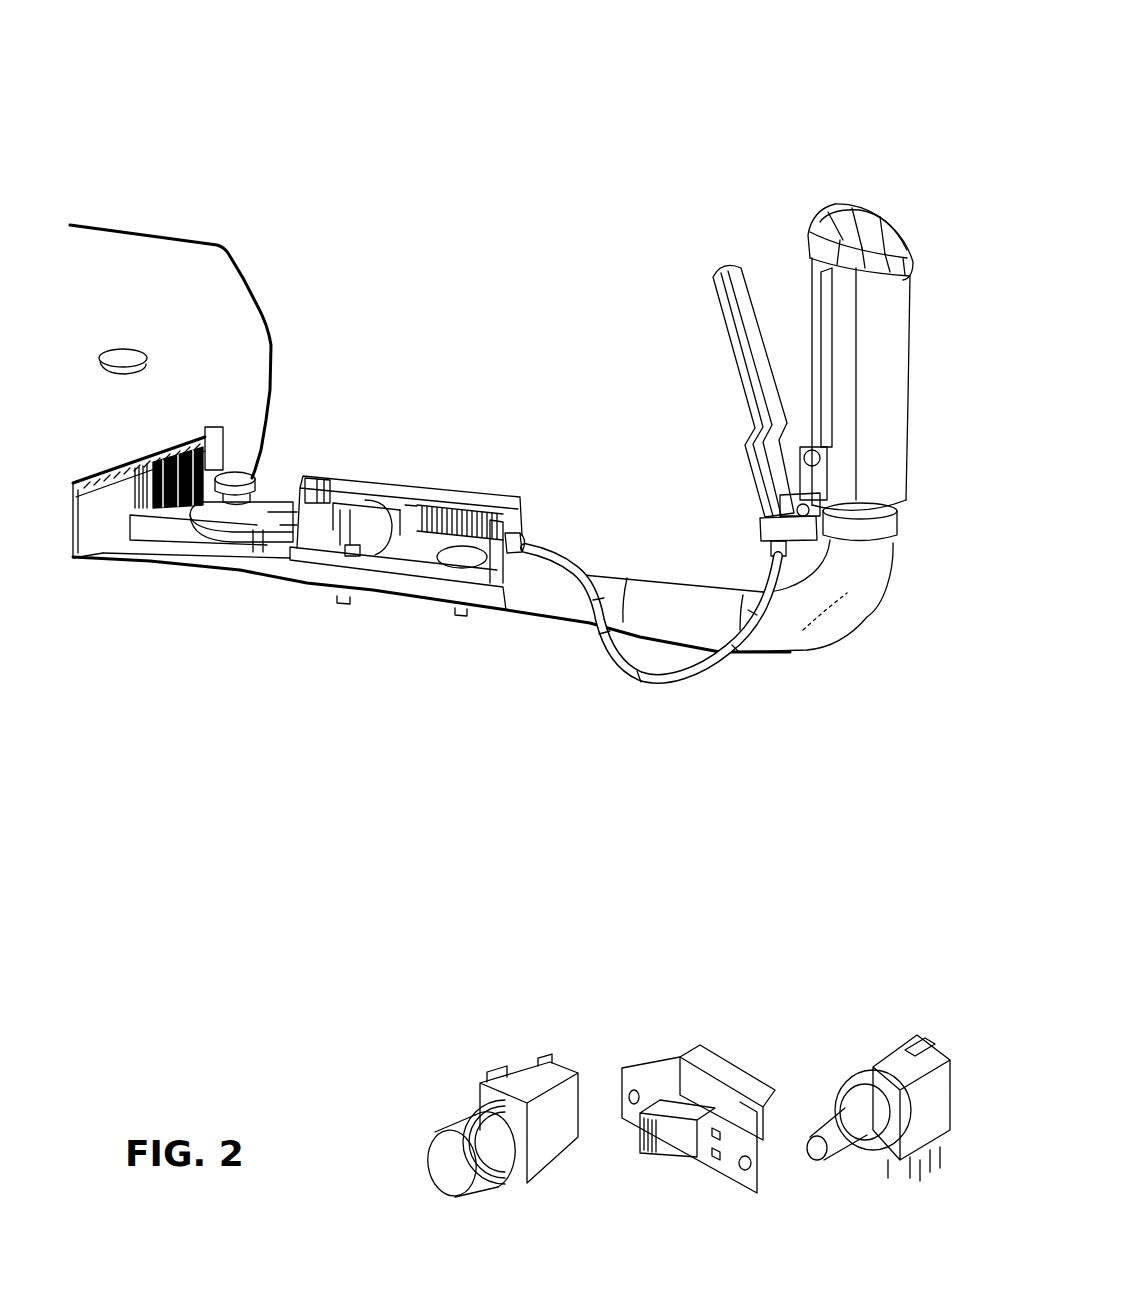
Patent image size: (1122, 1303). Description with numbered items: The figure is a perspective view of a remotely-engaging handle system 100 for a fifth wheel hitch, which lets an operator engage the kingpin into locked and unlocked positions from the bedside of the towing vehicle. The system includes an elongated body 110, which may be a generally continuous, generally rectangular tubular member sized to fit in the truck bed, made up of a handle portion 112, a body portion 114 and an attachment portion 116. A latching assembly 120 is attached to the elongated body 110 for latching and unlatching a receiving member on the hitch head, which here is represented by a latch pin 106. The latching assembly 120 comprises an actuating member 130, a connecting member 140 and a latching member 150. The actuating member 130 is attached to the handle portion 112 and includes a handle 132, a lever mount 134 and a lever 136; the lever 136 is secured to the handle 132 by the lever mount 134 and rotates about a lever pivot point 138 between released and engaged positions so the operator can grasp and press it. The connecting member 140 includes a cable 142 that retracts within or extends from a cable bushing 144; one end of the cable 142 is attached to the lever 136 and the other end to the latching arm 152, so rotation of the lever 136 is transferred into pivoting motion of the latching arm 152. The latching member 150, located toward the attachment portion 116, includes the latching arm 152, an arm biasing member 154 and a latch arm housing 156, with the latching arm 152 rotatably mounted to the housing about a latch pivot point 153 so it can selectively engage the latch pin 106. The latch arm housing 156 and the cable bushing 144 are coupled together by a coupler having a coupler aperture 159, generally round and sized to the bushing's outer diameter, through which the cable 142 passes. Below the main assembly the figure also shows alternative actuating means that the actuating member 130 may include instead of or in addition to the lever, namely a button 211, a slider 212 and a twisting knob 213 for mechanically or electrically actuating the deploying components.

The remotely-engaging handle system 100 is at (148, 103).
The latch pin 106 is at (250, 478).
The elongated body 110 is at (779, 686).
The handle portion 112 is at (890, 558).
The body portion 114 is at (690, 603).
The attachment portion 116 is at (395, 597).
The latching assembly 120 is at (888, 271).
The actuating member 130 is at (655, 358).
The handle 132 is at (878, 225).
The lever mount 134 is at (893, 523).
The lever 136 is at (718, 280).
The lever pivot point 138 is at (768, 518).
The connecting member 140 is at (634, 669).
The cable 142 is at (420, 565).
The cable bushing 144 is at (630, 678).
The latching member 150 is at (252, 716).
The latching arm 152 is at (262, 517).
The latch pivot point 153 is at (492, 434).
The arm biasing member 154 is at (492, 434).
The latch arm housing 156 is at (388, 538).
The coupler aperture 159 is at (530, 535).
The button 211 is at (475, 1060).
The slider 212 is at (677, 1050).
The twisting knob 213 is at (880, 1050).